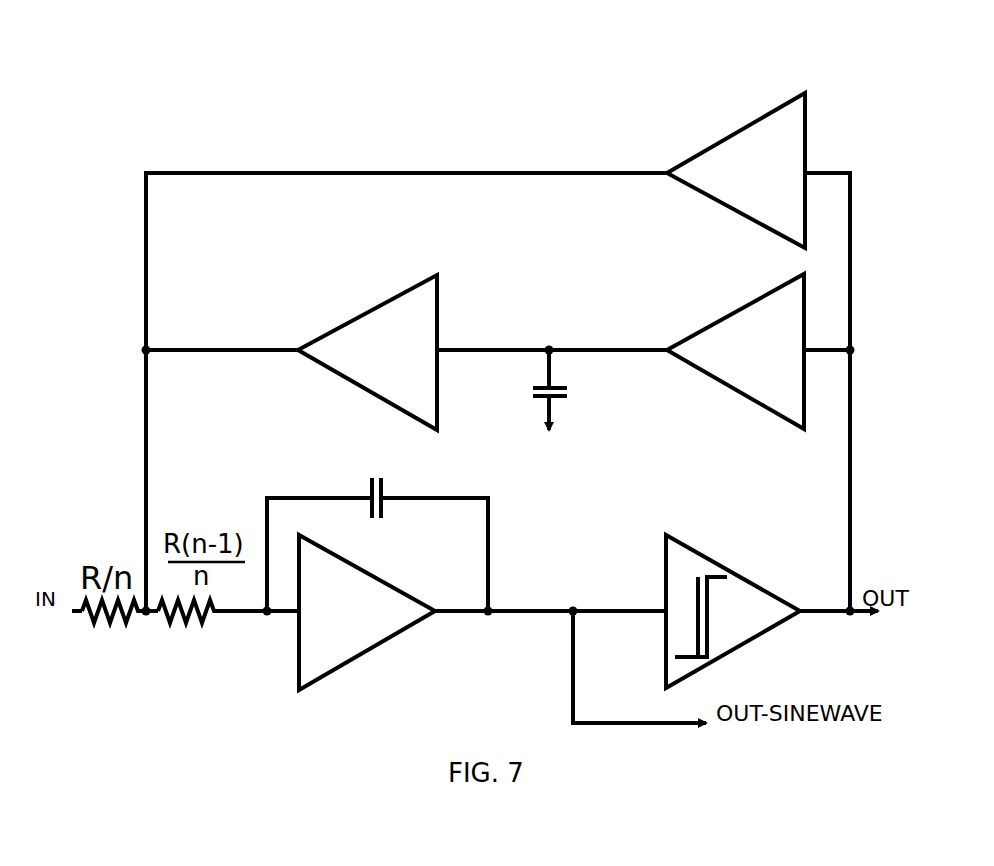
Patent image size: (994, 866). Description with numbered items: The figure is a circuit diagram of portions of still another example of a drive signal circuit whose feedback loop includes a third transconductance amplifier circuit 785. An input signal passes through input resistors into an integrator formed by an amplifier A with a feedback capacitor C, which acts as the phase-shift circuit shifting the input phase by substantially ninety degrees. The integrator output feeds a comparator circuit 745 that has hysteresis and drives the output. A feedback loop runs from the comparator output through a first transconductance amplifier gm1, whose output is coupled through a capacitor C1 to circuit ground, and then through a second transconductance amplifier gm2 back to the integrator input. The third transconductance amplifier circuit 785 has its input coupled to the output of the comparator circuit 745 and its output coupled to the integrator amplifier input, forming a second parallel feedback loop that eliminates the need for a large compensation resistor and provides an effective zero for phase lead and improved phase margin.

The third transconductance amplifier circuit 785 is at (807, 131).
The comparator circuit 745 is at (768, 590).
The feedback capacitor C is at (358, 476).
The capacitor C1 is at (572, 390).
The transconductance amplifier gm1 is at (735, 351).
The transconductance amplifier gm2 is at (367, 352).
The amplifier A is at (367, 612).